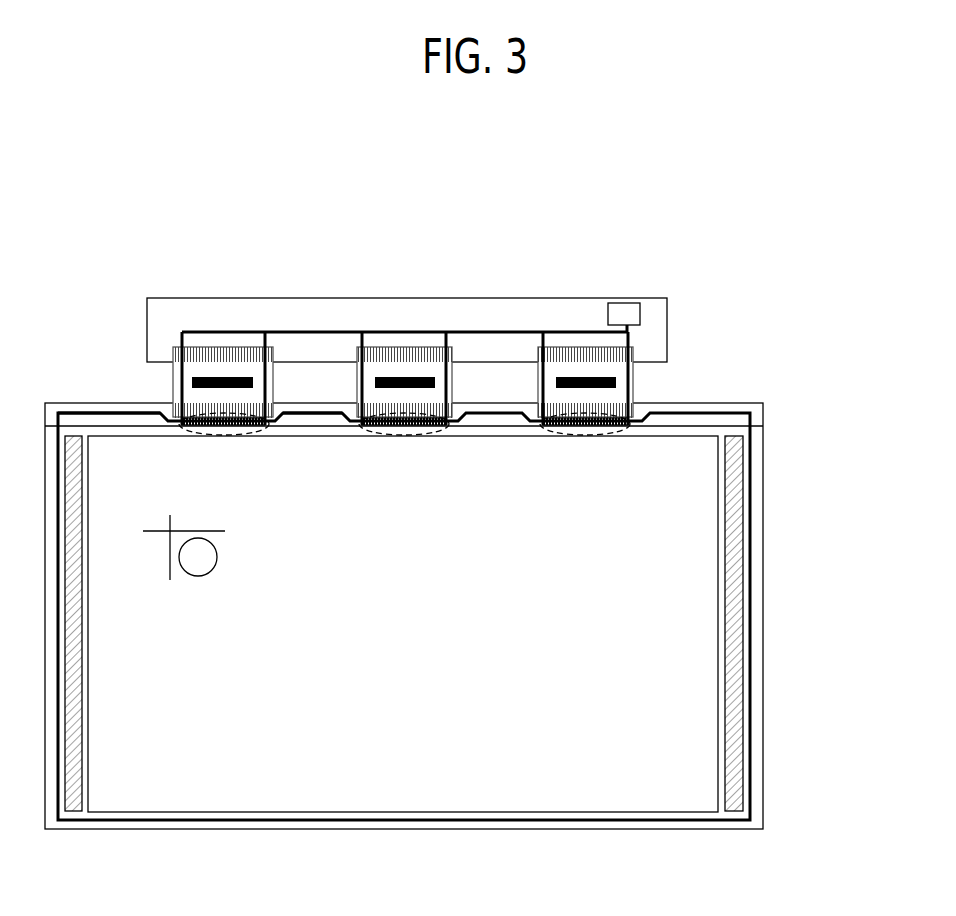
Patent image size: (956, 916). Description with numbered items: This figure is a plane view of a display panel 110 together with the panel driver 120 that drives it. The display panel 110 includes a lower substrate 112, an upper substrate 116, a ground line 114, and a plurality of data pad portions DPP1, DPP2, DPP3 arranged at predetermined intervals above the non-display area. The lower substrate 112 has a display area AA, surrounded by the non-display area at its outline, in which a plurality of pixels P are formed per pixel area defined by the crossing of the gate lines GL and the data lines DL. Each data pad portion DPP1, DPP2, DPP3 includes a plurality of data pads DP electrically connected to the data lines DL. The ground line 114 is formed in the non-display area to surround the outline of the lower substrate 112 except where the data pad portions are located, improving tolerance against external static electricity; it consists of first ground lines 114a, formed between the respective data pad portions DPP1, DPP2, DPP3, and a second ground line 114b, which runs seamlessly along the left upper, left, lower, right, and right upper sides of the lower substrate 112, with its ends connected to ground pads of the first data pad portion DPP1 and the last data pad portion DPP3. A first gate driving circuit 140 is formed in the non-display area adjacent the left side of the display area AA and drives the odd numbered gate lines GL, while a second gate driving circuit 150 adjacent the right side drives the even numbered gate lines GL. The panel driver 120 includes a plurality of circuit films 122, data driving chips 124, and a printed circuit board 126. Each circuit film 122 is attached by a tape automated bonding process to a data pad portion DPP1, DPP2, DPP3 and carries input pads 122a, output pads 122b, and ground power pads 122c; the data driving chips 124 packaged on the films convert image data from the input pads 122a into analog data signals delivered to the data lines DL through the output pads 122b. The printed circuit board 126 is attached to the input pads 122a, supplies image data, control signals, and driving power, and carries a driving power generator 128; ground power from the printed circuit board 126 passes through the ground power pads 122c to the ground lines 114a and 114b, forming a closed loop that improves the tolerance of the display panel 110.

The display panel 110 is at (452, 615).
The lower substrate 112 is at (755, 412).
The upper substrate 116 is at (755, 457).
The ground line 114 is at (200, 304).
The first ground lines 114a is at (333, 412).
The second ground line 114b is at (88, 412).
The panel driver 120 is at (411, 312).
The circuit films 122 is at (403, 316).
The input pads 122a is at (420, 355).
The output pads 122b is at (374, 410).
The ground power pads 122c is at (357, 378).
The data driving chips 124 is at (597, 377).
The printed circuit board 126 is at (483, 298).
The driving power generator 128 is at (632, 307).
The first gate driving circuit 140 is at (72, 812).
The second gate driving circuit 150 is at (733, 812).
The display area AA is at (375, 637).
The data lines DL is at (172, 536).
The gate lines GL is at (171, 530).
The pixels P is at (217, 557).
The data pads DP is at (233, 425).
The first data pad portion DPP1 is at (210, 410).
The second data pad portion DPP2 is at (423, 412).
The last data pad portion DPP3 is at (615, 408).